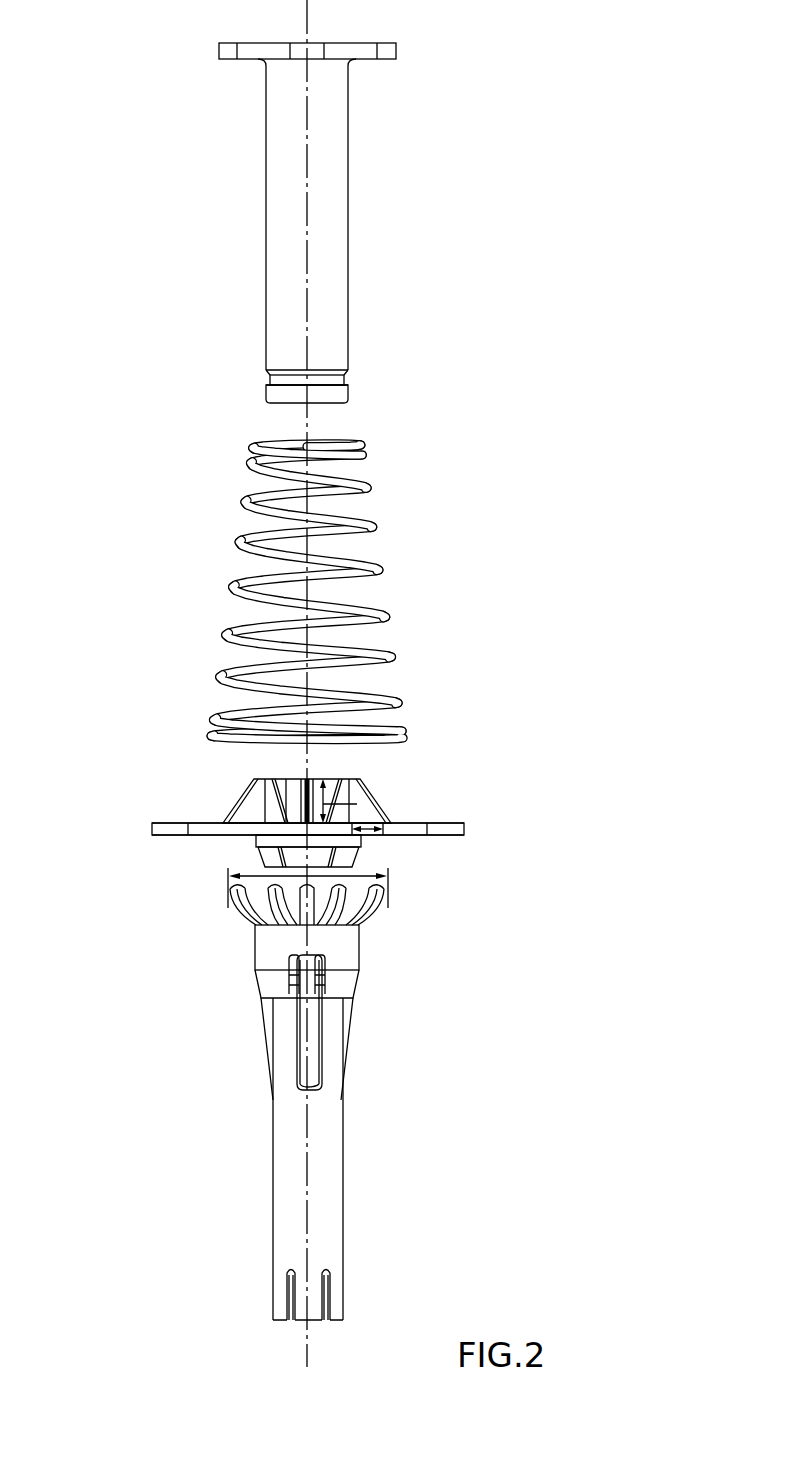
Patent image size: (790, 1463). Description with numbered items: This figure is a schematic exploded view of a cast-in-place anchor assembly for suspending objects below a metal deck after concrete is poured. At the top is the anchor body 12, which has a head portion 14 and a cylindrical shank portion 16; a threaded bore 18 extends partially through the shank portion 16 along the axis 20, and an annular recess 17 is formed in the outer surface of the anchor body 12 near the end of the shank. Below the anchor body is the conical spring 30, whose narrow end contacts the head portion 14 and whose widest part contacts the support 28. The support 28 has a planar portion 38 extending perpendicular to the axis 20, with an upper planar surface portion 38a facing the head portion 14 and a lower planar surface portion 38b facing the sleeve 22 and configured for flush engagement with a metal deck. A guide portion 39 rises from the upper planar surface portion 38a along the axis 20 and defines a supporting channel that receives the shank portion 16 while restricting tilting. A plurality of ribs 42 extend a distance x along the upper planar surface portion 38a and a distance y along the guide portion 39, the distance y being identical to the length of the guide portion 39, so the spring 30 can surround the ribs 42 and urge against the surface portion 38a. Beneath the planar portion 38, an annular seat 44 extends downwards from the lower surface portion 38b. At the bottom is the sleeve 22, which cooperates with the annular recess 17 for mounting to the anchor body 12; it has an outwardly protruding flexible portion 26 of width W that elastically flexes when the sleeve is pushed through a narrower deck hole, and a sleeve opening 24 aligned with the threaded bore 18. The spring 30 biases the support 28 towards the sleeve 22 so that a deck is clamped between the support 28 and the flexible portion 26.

The anchor body 12 is at (196, 206).
The head portion 14 is at (397, 50).
The shank portion 16 is at (330, 165).
The annular recess 17 is at (347, 381).
The threaded bore 18 is at (267, 428).
The axis 20 is at (305, 22).
The sleeve 22 is at (290, 1191).
The sleeve opening 24 is at (266, 1352).
The flexible portion 26 is at (254, 912).
The support 28 is at (257, 841).
The spring 30 is at (355, 488).
The planar portion 38 is at (452, 827).
The upper planar surface portion 38a is at (178, 822).
The lower planar surface portion 38b is at (163, 837).
The guide portion 39 is at (275, 783).
The ribs 42 is at (257, 807).
The annular seat 44 is at (227, 830).
The distance x is at (367, 832).
The distance y is at (357, 804).
The width W is at (388, 876).